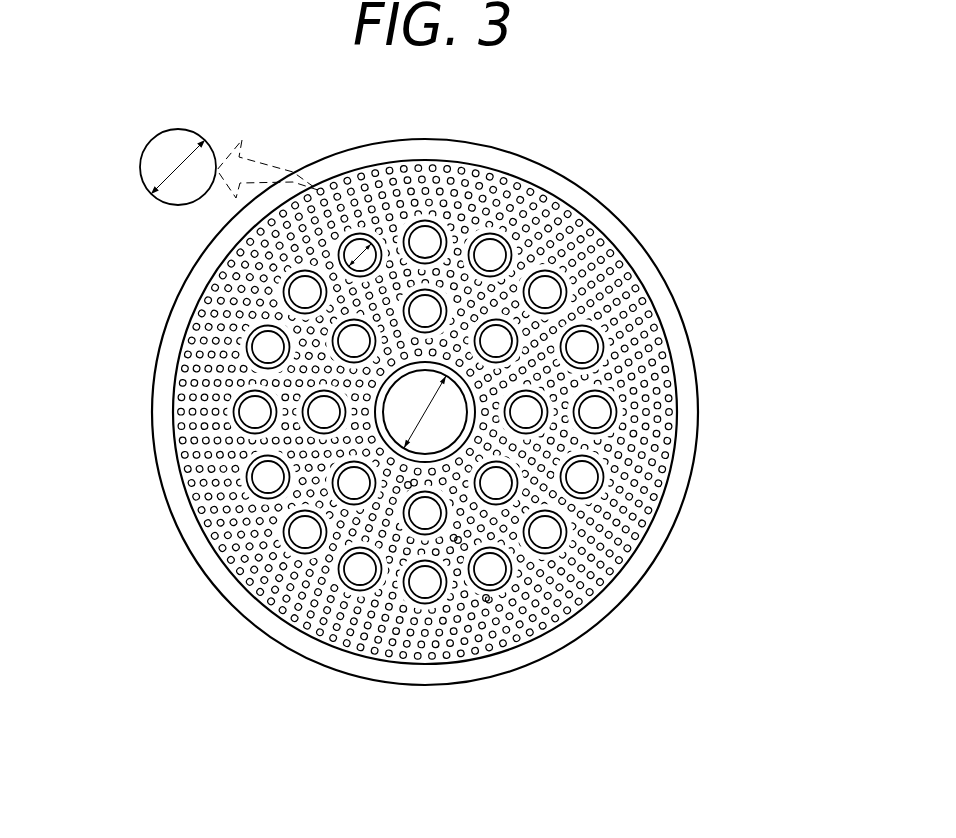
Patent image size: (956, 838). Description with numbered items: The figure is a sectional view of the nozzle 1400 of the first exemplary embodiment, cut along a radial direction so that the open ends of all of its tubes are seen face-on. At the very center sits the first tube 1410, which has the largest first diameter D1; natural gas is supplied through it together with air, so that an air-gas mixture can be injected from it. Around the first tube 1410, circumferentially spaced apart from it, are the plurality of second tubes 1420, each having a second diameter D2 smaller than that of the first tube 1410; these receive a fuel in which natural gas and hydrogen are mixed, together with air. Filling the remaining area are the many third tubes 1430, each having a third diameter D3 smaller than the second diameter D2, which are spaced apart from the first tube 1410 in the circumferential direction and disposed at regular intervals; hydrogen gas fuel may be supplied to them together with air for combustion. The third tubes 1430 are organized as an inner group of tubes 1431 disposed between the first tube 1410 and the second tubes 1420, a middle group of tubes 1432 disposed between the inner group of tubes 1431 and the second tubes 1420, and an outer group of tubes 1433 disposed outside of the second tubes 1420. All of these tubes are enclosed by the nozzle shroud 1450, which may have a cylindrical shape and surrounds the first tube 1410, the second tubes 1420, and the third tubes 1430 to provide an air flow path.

The nozzle 1400 is at (650, 206).
The first tube 1410 is at (468, 400).
The second tubes 1420 is at (567, 292).
The third tubes 1430 is at (357, 750).
The inner group of tubes 1431 is at (408, 489).
The middle group of tubes 1432 is at (458, 544).
The outer group of tubes 1433 is at (486, 602).
The nozzle shroud 1450 is at (683, 457).
The first diameter D1 is at (420, 410).
The second diameter D2 is at (340, 255).
The third diameter D3 is at (177, 160).